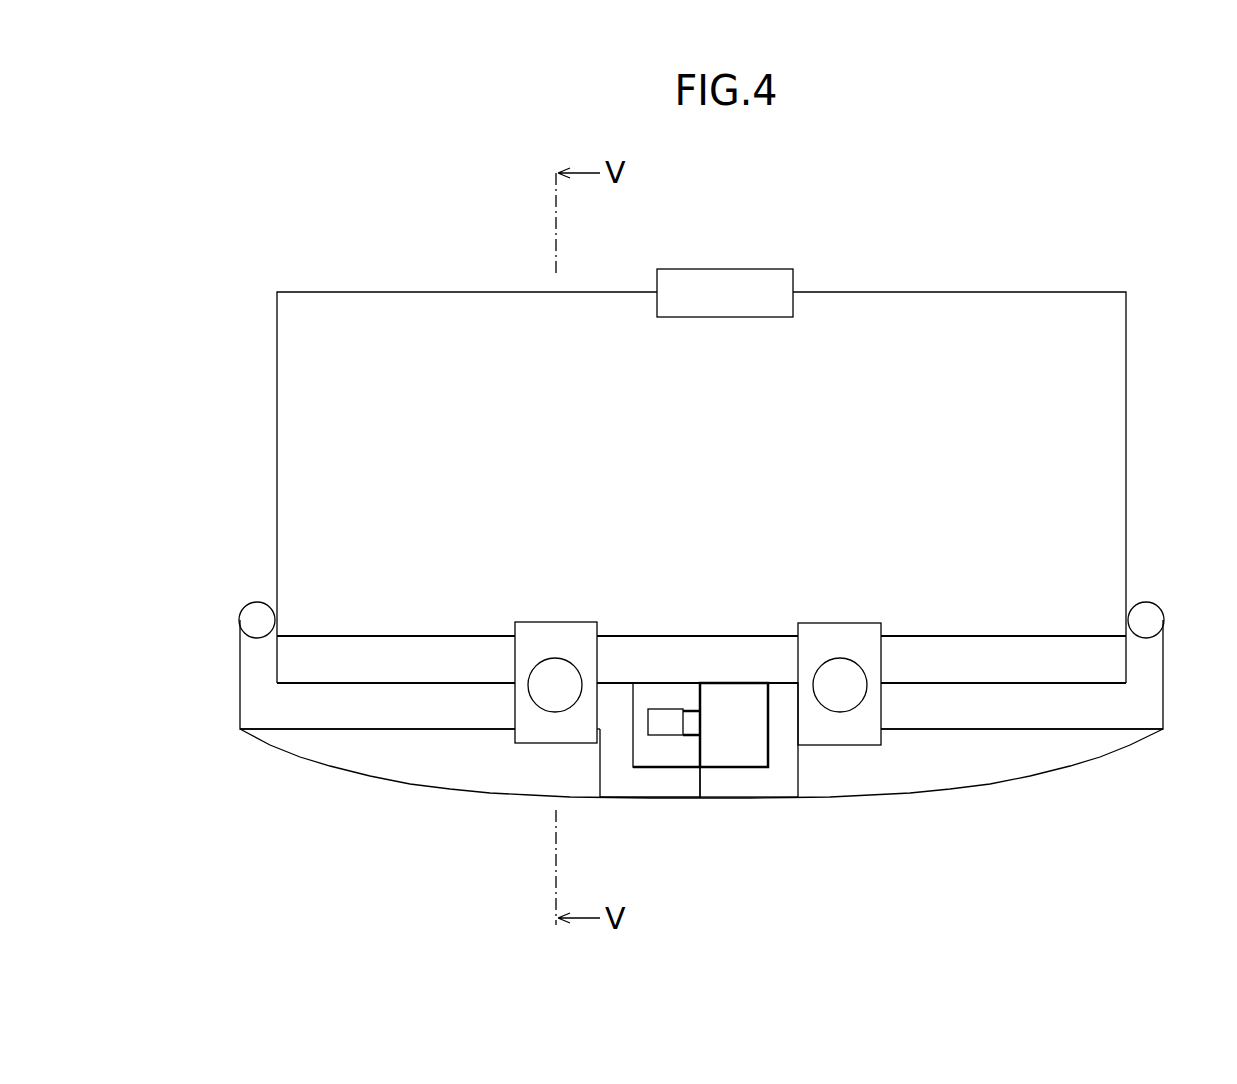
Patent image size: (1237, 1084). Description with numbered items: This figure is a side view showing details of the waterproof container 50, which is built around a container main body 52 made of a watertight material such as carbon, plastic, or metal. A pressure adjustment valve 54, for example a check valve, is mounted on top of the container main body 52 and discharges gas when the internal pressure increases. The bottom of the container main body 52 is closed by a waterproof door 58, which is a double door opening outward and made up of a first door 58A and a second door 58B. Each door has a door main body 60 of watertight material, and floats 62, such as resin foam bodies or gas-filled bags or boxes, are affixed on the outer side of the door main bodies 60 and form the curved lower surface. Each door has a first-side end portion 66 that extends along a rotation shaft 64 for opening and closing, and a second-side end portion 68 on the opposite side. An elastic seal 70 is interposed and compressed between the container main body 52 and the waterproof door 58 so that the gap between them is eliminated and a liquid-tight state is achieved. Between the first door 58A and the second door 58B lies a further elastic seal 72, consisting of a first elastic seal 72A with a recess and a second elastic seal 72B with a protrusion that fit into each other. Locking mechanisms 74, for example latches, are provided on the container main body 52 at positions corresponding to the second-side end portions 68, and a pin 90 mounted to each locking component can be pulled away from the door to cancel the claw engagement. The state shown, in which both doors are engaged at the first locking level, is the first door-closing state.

The waterproof container 50 is at (1101, 256).
The container main body 52 is at (1130, 378).
The pressure adjustment valve 54 is at (735, 290).
The waterproof door 58 is at (712, 807).
The first door 58A is at (610, 813).
The second door 58B is at (823, 826).
The door main body 60 is at (470, 712).
The float 62 is at (357, 760).
The rotation shaft 64 is at (258, 602).
The first-side end portion 66 is at (245, 665).
The second-side end portion 68 is at (623, 693).
The elastic seal 70 is at (436, 653).
The elastic seal 72 is at (700, 657).
The first elastic seal 72A is at (668, 678).
The second elastic seal 72B is at (732, 693).
The locking mechanism 74 is at (593, 611).
The pin 90 is at (553, 676).